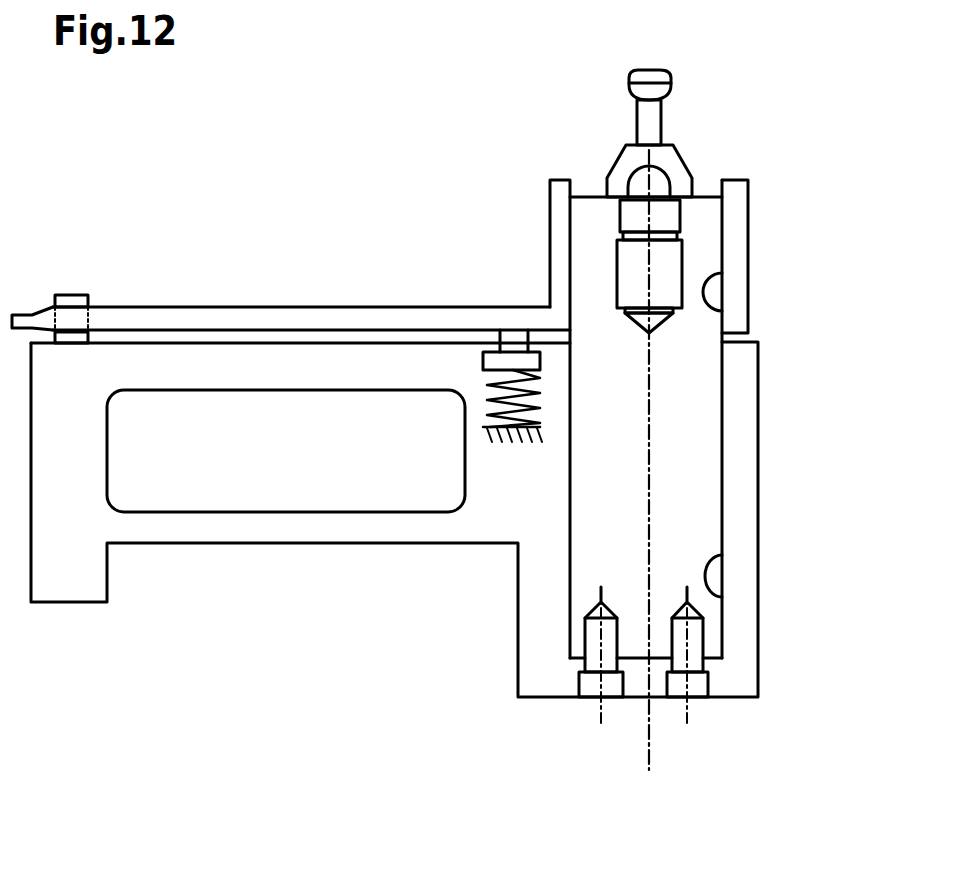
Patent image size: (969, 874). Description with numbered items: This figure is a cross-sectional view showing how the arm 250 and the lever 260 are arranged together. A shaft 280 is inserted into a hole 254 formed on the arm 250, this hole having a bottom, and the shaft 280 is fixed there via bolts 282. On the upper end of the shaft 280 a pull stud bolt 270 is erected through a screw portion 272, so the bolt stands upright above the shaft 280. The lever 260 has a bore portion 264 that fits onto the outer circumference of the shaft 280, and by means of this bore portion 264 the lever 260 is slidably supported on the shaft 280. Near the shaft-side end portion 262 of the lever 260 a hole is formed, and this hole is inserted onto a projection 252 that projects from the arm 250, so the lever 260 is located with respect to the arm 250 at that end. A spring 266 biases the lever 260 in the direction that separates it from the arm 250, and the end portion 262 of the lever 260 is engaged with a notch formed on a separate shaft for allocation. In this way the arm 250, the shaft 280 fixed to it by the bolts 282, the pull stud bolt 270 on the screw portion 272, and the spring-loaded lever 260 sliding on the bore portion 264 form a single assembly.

The arm 250 is at (737, 510).
The projection 252 is at (77, 302).
The hole 254 is at (722, 597).
The lever 260 is at (315, 322).
The end portion 262 is at (25, 320).
The bore portion 264 is at (722, 312).
The spring 266 is at (517, 360).
The pull stud bolt 270 is at (650, 84).
The screw portion 272 is at (683, 256).
The shaft 280 is at (687, 413).
The bolts 282 is at (583, 697).